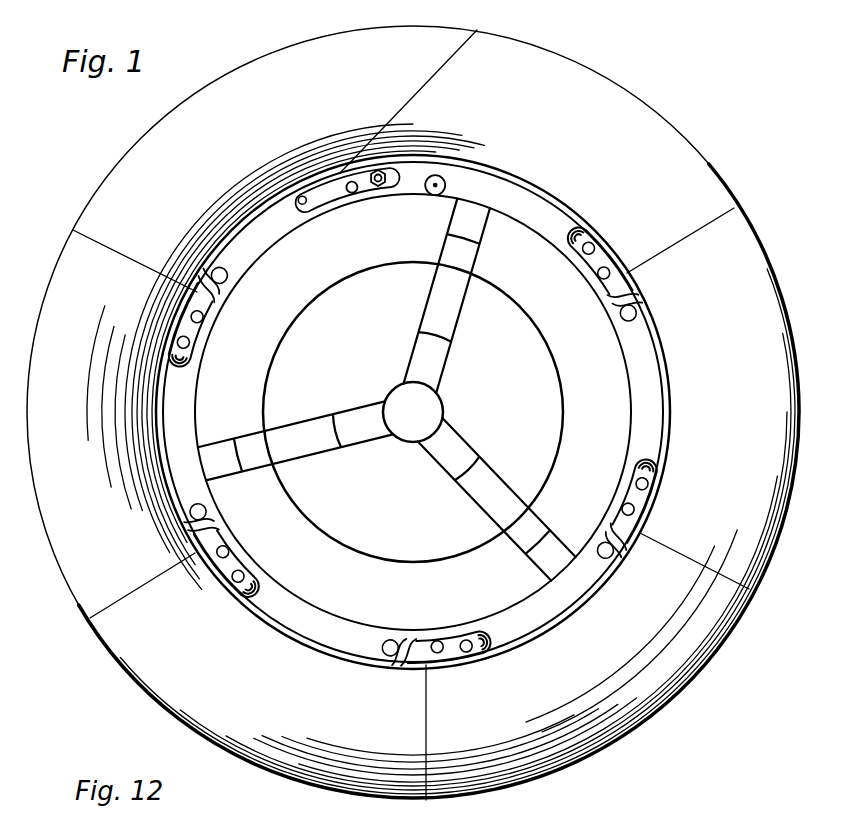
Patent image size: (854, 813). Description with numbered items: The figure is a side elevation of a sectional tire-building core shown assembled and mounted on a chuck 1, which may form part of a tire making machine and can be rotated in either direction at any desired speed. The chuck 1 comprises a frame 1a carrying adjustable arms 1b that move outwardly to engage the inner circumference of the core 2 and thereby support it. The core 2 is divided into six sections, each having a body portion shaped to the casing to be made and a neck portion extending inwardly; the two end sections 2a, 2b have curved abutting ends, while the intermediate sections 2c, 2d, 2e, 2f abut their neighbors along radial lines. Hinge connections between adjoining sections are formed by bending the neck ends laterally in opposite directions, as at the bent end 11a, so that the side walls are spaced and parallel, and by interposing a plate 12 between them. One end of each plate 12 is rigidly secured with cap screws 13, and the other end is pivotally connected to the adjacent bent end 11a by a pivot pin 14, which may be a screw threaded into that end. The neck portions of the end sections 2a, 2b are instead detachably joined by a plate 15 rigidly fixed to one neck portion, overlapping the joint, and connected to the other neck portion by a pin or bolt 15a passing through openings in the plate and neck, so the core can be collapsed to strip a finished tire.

The chuck 1 is at (413, 412).
The frame 1a is at (552, 364).
The adjustable arms 1b is at (445, 243).
The core 2 is at (413, 419).
The end section 2a is at (152, 139).
The end section 2b is at (585, 80).
The intermediate section 2c is at (701, 240).
The intermediate section 2d is at (689, 676).
The intermediate section 2e is at (250, 753).
The intermediate section 2f is at (82, 593).
The bent end 11a is at (220, 514).
The plate 12 is at (597, 287).
The cap screws 13 is at (190, 342).
The pivot pin 14 is at (228, 278).
The plate 15 is at (353, 200).
The pin or bolt 15a is at (303, 206).